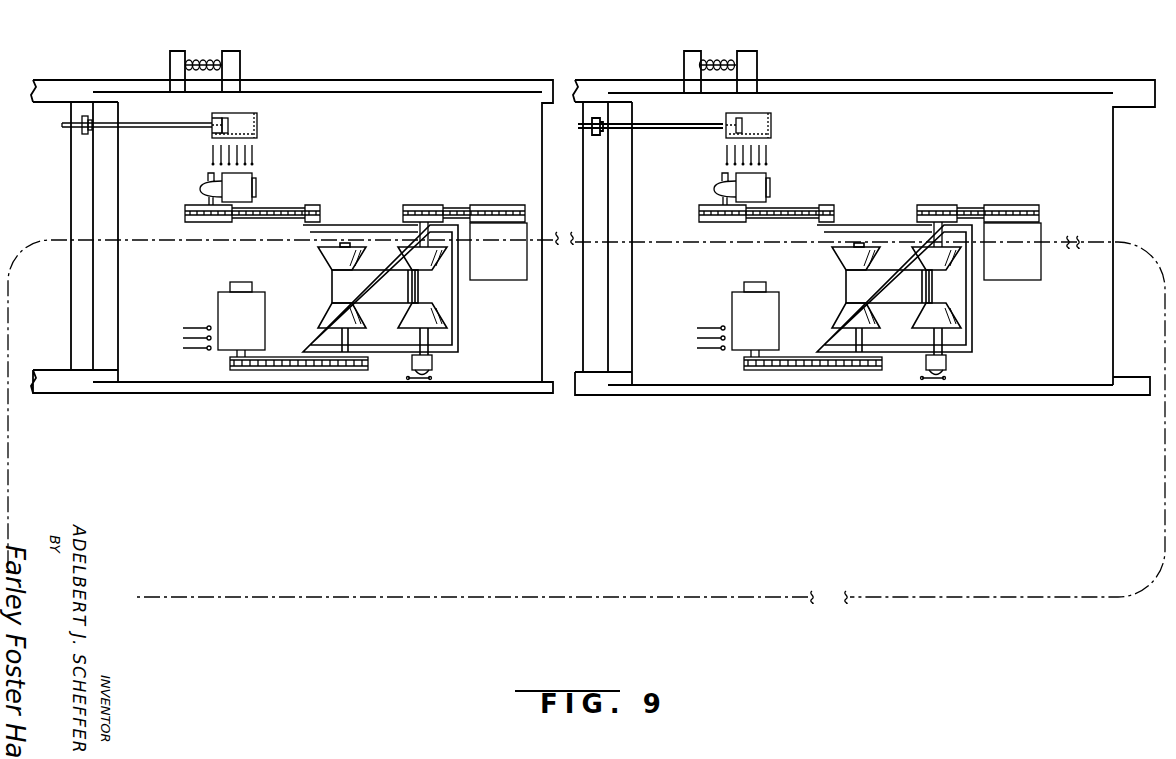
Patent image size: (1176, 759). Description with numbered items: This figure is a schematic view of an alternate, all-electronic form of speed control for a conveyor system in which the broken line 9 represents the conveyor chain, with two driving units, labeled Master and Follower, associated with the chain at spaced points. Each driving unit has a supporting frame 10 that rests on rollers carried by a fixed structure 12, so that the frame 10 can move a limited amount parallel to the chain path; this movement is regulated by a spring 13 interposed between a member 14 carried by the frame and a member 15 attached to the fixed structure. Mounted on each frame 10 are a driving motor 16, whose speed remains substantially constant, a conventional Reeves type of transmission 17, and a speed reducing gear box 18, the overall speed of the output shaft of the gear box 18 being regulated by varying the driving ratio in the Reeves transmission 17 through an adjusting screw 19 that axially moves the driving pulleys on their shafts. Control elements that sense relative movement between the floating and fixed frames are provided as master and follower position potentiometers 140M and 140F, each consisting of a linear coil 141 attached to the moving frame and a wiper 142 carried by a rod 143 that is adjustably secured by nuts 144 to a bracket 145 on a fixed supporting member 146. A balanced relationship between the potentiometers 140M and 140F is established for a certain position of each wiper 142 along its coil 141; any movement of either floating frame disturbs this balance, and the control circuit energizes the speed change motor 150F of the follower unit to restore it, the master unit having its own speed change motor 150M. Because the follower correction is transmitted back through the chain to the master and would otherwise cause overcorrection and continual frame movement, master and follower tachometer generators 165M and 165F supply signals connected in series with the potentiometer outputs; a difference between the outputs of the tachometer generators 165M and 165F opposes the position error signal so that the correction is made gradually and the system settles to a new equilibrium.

The conveyor chain 9 is at (208, 243).
The supporting frame 10 is at (200, 372).
The fixed structure 12 is at (90, 384).
The spring 13 is at (192, 62).
The member 14 is at (240, 76).
The member 15 is at (170, 65).
The driving motor 16 is at (252, 336).
The Reeves transmission 17 is at (458, 340).
The gear box 18 is at (482, 282).
The adjusting screw 19 is at (320, 219).
The master position potentiometer 140M is at (257, 127).
The follower position potentiometer 140F is at (778, 126).
The linear coil 141 is at (258, 140).
The wiper 142 is at (212, 118).
The rod 143 is at (183, 128).
The nuts 144 is at (80, 120).
The bracket 145 is at (82, 131).
The fixed supporting member 146 is at (85, 170).
The master speed change motor 150M is at (253, 187).
The follower speed change motor 150F is at (772, 189).
The master tachometer generator 165M is at (433, 366).
The follower tachometer generator 165F is at (963, 369).